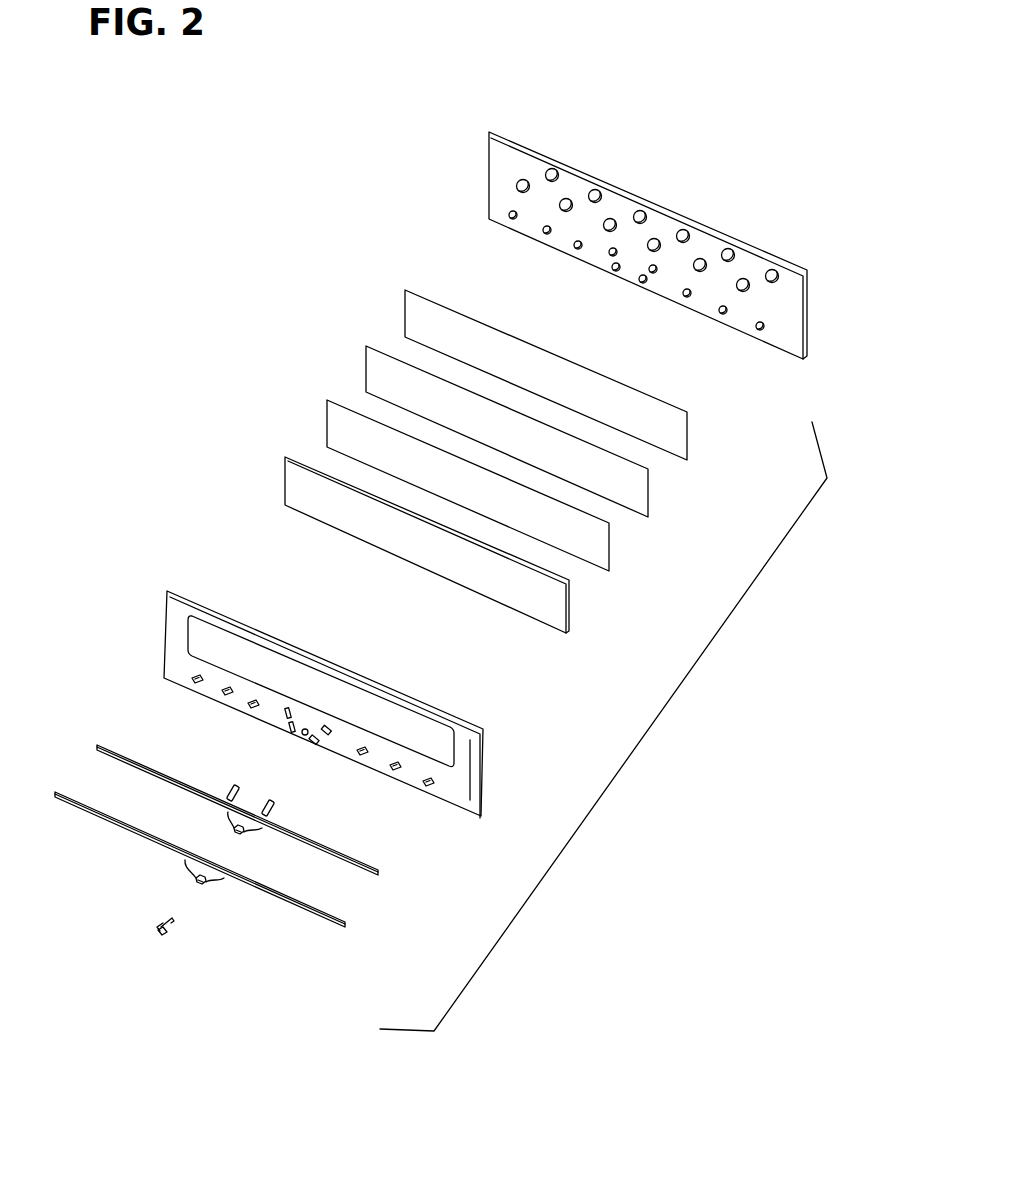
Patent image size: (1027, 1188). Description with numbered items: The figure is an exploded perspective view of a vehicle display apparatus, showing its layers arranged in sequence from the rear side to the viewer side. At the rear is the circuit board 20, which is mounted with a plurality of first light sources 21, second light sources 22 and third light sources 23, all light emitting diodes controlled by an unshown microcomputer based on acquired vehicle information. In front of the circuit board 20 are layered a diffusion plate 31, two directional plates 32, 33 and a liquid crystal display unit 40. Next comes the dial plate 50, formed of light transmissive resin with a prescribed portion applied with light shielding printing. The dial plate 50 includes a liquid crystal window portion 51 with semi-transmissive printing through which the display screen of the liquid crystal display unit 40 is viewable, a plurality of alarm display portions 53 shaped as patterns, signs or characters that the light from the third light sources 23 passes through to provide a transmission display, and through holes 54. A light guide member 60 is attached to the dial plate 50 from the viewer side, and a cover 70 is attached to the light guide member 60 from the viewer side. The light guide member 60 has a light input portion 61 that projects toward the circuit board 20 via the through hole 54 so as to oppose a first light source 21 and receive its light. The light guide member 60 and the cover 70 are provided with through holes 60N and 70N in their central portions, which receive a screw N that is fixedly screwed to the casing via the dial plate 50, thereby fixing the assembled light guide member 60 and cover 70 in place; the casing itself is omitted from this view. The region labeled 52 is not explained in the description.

The circuit board 20 is at (713, 229).
The first light source 21 is at (609, 254).
The second light source 22 is at (636, 211).
The third light source 23 is at (510, 219).
The diffusion plate 31 is at (416, 292).
The directional plate 32 is at (370, 346).
The directional plate 33 is at (330, 401).
The liquid crystal display unit 40 is at (287, 459).
The dial plate 50 is at (183, 594).
The liquid crystal window portion 51 is at (420, 718).
The panel surface 52 is at (472, 752).
The alarm display portion 53 is at (195, 681).
The through hole 54 is at (286, 711).
The light guide member 60 is at (115, 751).
The light input portion 61 is at (230, 786).
The through hole 60N is at (241, 834).
The cover 70 is at (64, 797).
The through hole 70N is at (203, 885).
The screw N is at (158, 929).